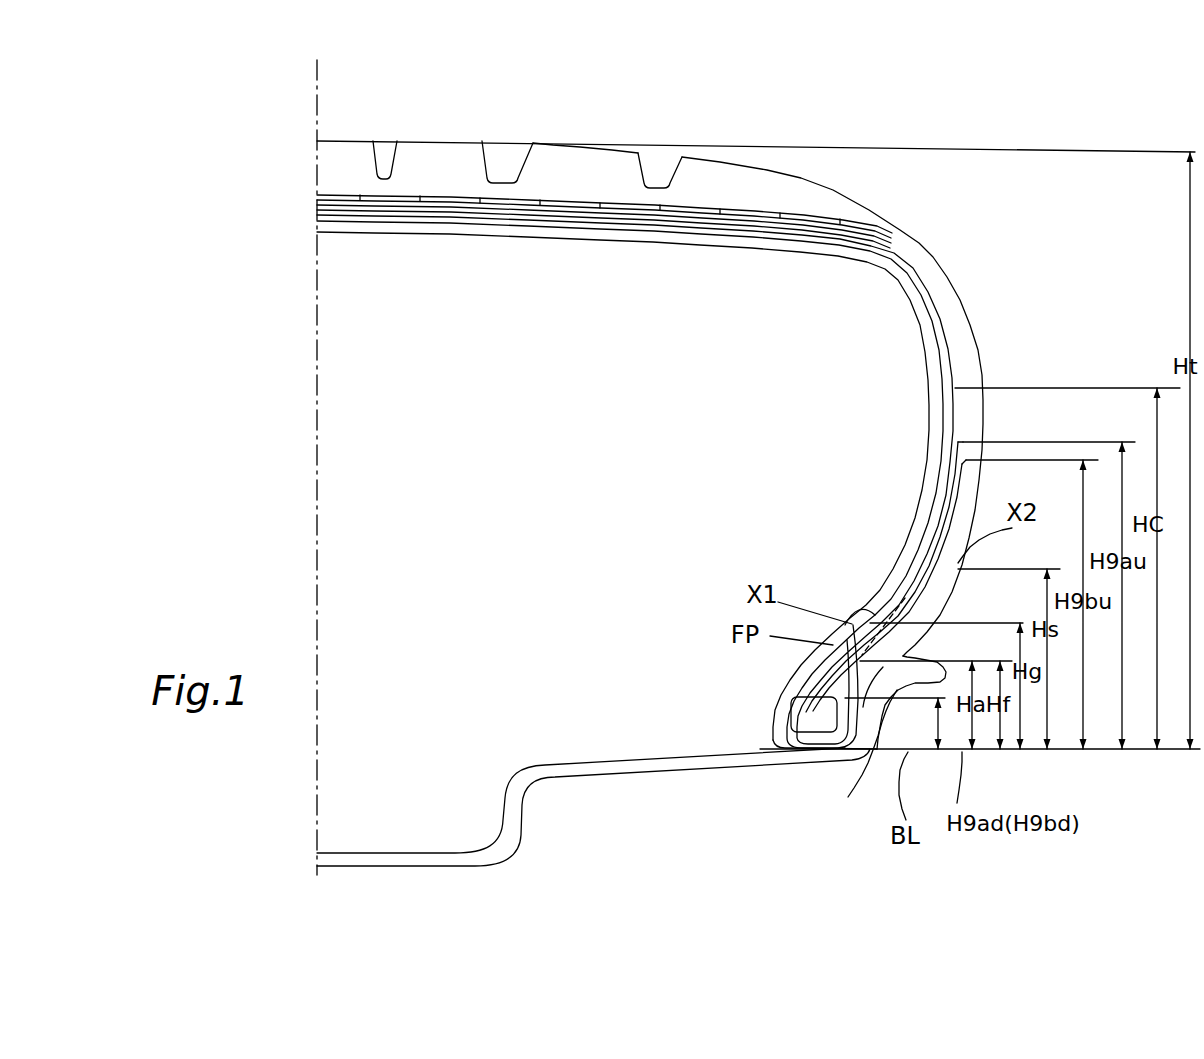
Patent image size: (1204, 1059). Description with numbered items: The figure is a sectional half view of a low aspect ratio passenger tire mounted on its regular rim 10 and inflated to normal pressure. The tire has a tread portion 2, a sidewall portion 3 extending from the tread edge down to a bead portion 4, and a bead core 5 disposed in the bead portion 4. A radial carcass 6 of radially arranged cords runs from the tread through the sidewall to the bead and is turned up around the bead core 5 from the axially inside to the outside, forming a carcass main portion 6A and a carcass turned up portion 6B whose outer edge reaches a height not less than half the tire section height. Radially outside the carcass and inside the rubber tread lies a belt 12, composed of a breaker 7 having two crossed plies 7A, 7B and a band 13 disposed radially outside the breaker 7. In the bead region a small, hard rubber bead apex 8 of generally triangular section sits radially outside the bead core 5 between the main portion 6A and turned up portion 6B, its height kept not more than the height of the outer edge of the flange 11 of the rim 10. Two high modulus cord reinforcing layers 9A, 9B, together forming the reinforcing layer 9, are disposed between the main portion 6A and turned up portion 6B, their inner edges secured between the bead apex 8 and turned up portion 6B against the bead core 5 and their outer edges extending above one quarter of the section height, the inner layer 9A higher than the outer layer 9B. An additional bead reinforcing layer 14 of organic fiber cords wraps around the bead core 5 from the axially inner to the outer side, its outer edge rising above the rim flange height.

The tread portion 2 is at (596, 138).
The sidewall portion 3 is at (976, 311).
The bead portion 4 is at (770, 661).
The bead core 5 is at (805, 722).
The radial carcass 6 is at (659, 423).
The carcass main portion 6A is at (920, 338).
The carcass turned up portion 6B is at (950, 400).
The breaker 7 is at (228, 215).
The breaker ply 7A is at (317, 214).
The breaker ply 7B is at (317, 207).
The bead apex 8 is at (797, 674).
The reinforcing layer 9 is at (659, 503).
The axially inner reinforcing layer 9A is at (947, 463).
The axially outer reinforcing layer 9B is at (950, 487).
The regular rim 10 is at (580, 757).
The rim flange 11 is at (863, 758).
The belt 12 is at (440, 192).
The band 13 is at (337, 197).
The additional bead reinforcing layer 14 is at (888, 600).